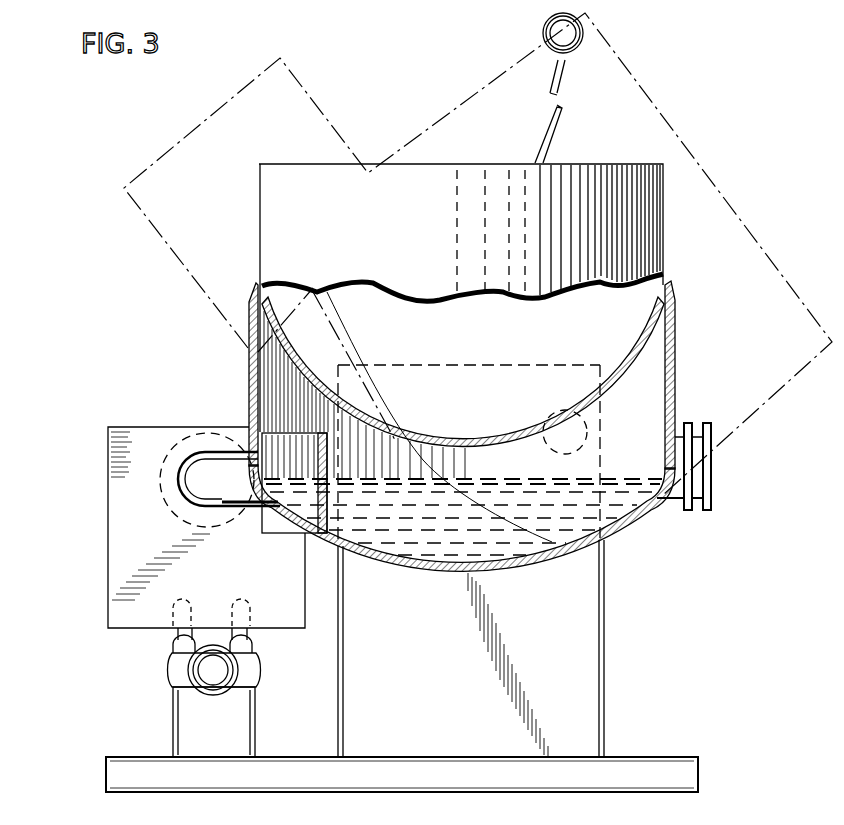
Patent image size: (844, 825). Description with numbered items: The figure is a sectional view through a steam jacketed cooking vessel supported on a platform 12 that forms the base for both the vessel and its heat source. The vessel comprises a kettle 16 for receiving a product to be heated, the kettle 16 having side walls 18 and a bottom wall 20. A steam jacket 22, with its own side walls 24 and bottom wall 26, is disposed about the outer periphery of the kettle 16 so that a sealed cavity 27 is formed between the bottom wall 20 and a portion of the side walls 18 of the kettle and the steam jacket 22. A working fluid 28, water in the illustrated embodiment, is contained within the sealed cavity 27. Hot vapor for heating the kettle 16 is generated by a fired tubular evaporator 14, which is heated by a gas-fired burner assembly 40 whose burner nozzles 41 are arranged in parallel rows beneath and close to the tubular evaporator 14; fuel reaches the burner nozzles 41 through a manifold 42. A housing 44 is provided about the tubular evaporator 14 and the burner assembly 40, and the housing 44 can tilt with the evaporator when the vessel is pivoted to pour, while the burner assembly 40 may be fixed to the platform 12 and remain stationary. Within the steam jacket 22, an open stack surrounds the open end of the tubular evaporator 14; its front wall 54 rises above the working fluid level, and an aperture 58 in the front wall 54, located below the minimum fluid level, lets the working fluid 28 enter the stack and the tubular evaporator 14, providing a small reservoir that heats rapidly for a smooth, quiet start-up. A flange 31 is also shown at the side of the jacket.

The platform 12 is at (655, 757).
The tubular evaporator 14 is at (210, 440).
The kettle 16 is at (662, 183).
The side walls 18 is at (668, 250).
The bottom wall 20 is at (668, 357).
The steam jacket 22 is at (692, 388).
The side walls 24 is at (673, 493).
The bottom wall 26 is at (637, 527).
The sealed cavity 27 is at (660, 413).
The working fluid 28 is at (668, 505).
The flange 31 is at (718, 448).
The gas-fired burner assembly 40 is at (152, 670).
The burner nozzles 41 is at (172, 603).
The manifold 42 is at (208, 675).
The housing 44 is at (108, 517).
The front wall 54 is at (337, 517).
The aperture 58 is at (305, 532).